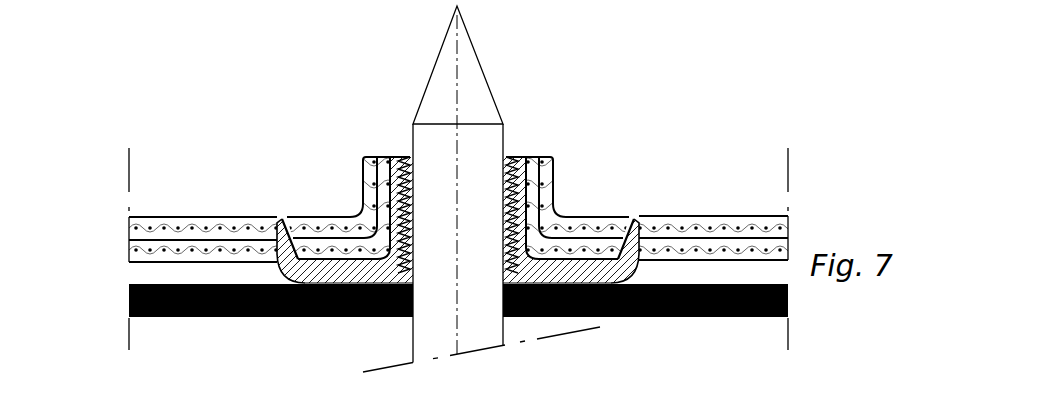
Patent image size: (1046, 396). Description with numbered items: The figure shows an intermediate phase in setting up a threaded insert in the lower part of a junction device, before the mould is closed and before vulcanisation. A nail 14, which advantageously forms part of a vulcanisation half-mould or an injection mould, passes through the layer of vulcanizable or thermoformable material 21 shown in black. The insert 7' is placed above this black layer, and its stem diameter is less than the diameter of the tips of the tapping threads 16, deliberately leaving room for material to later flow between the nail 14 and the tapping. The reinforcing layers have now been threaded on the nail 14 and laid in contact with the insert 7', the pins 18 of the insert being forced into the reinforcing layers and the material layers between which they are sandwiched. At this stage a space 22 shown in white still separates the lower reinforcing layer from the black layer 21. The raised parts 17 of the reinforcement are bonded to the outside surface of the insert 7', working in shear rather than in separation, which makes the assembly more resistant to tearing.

The nail 14 is at (468, 77).
The tapping threads 16 is at (523, 157).
The raised parts of the reinforcement 17 is at (552, 183).
The pins of the insert 18 is at (642, 230).
The layer of vulcanizable or thermoformable material 21 is at (235, 317).
The space 22 is at (145, 275).
The insert 7' is at (478, 259).